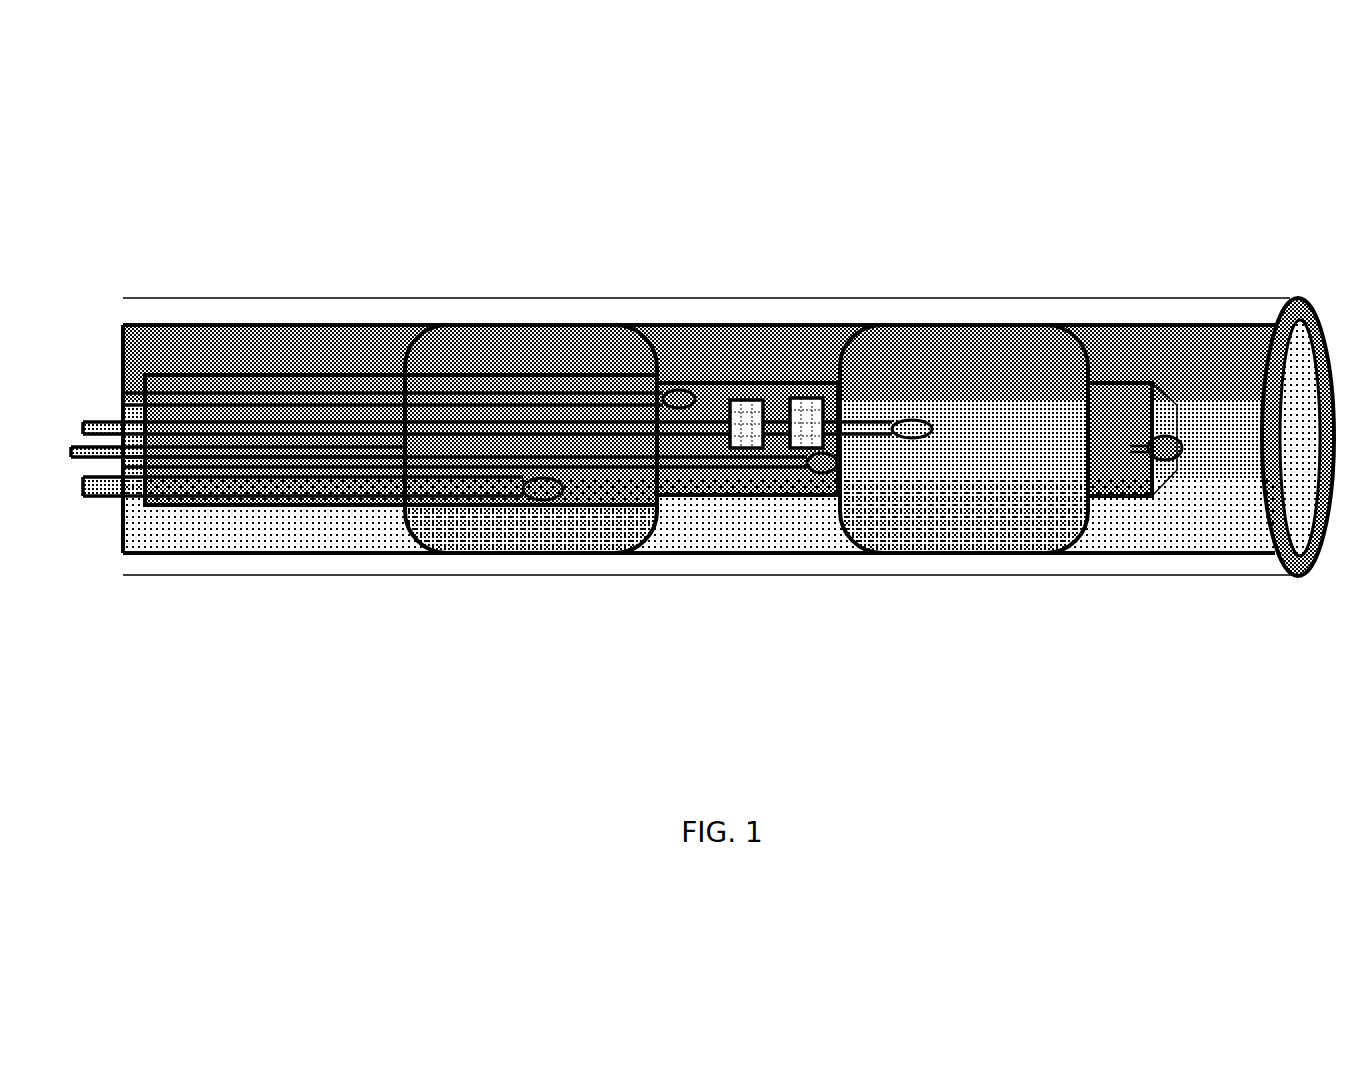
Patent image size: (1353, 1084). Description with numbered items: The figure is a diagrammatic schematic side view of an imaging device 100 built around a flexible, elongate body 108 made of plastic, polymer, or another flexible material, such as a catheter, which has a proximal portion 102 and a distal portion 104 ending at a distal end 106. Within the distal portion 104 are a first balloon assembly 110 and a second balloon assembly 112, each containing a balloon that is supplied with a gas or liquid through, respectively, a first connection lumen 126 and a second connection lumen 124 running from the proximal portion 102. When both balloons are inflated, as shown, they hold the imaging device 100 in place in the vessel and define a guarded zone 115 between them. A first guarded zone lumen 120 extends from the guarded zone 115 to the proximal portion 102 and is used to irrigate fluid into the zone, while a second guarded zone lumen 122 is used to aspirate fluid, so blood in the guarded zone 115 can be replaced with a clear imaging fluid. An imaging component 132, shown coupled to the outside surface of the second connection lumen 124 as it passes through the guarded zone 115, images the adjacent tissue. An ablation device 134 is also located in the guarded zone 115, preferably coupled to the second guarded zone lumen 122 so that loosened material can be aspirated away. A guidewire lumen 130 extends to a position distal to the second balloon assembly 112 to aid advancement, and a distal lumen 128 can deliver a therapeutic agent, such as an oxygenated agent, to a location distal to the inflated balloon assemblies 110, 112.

The imaging device 100 is at (555, 660).
The proximal portion 102 is at (123, 595).
The distal portion 104 is at (1227, 627).
The distal end 106 is at (1298, 577).
The flexible, elongate body 108 is at (937, 575).
The first balloon assembly 110 is at (567, 323).
The second balloon assembly 112 is at (946, 323).
The guarded zone 115 is at (708, 398).
The first guarded zone lumen 120 is at (255, 390).
The second guarded zone lumen 122 is at (703, 465).
The second connection lumen 124 is at (488, 495).
The first connection lumen 126 is at (365, 425).
The distal lumen 128 is at (1165, 465).
The guidewire lumen 130 is at (1175, 377).
The imaging component 132 is at (746, 448).
The ablation device 134 is at (797, 395).